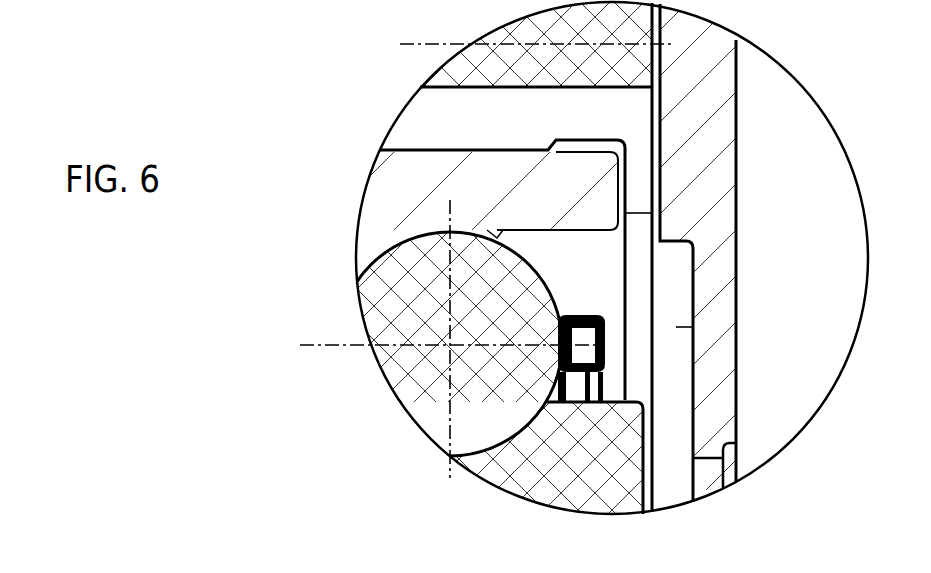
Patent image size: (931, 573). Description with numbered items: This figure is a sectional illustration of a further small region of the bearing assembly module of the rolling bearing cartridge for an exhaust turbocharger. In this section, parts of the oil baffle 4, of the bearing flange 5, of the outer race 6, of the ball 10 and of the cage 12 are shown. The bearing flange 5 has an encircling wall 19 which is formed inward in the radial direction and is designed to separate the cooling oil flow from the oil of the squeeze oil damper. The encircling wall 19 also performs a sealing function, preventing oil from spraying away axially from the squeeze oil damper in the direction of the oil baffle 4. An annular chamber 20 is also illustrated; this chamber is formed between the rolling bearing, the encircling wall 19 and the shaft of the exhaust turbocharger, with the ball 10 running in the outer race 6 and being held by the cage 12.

The oil baffle 4 is at (715, 63).
The bearing flange 5 is at (443, 118).
The outer race 6 is at (407, 183).
The ball 10 is at (393, 303).
The cage 12 is at (557, 362).
The encircling wall 19 is at (637, 190).
The annular chamber 20 is at (683, 386).